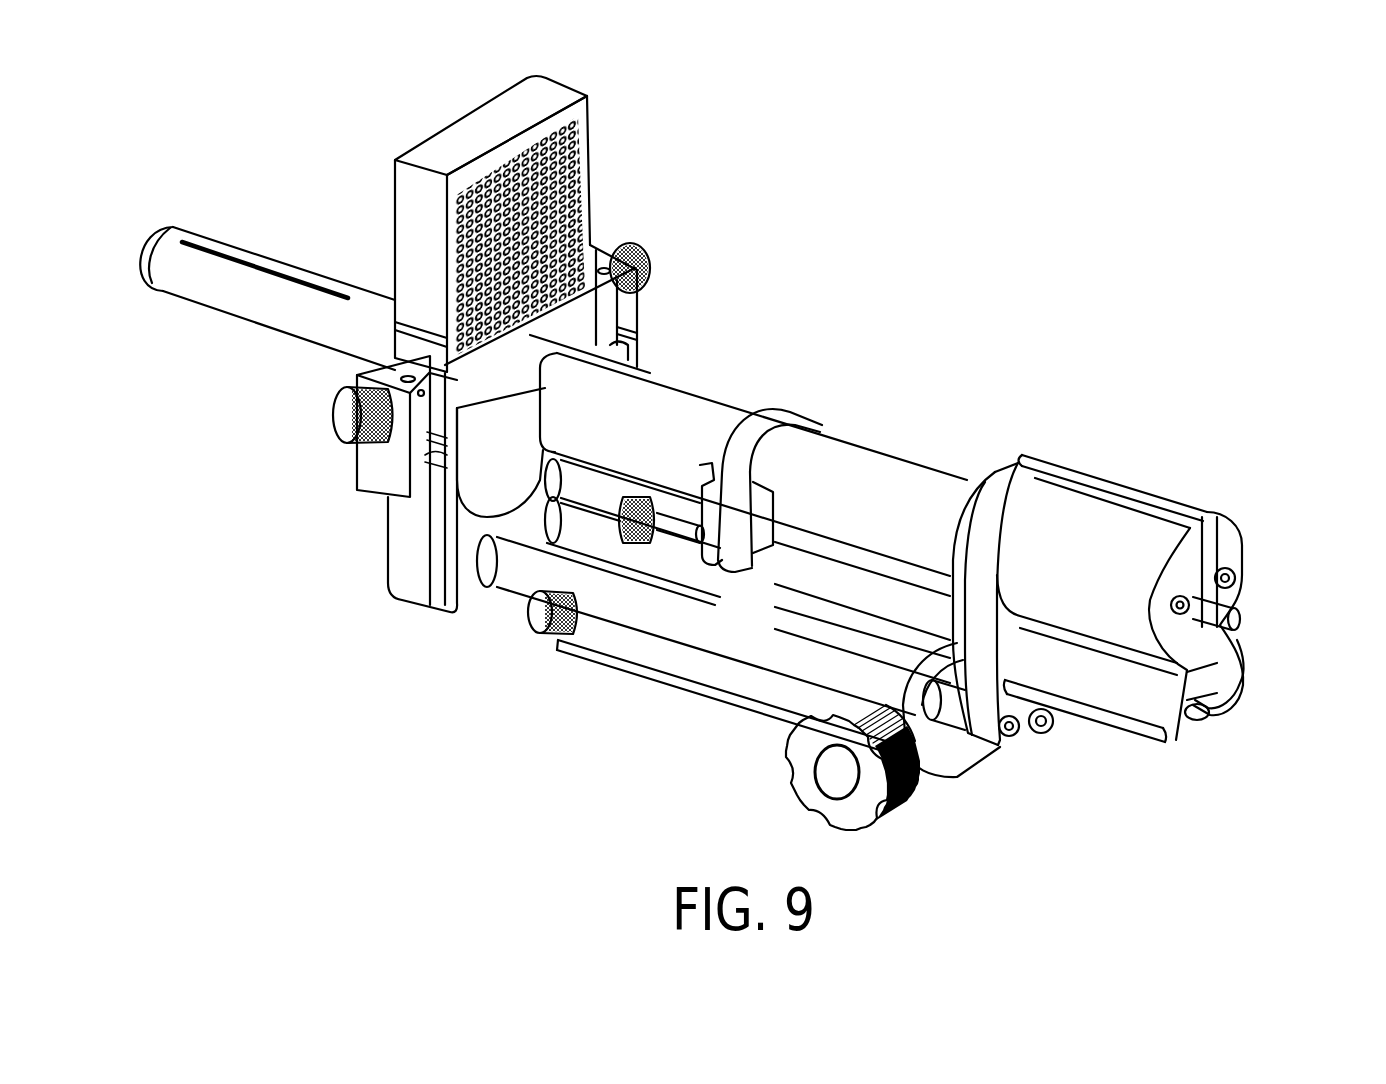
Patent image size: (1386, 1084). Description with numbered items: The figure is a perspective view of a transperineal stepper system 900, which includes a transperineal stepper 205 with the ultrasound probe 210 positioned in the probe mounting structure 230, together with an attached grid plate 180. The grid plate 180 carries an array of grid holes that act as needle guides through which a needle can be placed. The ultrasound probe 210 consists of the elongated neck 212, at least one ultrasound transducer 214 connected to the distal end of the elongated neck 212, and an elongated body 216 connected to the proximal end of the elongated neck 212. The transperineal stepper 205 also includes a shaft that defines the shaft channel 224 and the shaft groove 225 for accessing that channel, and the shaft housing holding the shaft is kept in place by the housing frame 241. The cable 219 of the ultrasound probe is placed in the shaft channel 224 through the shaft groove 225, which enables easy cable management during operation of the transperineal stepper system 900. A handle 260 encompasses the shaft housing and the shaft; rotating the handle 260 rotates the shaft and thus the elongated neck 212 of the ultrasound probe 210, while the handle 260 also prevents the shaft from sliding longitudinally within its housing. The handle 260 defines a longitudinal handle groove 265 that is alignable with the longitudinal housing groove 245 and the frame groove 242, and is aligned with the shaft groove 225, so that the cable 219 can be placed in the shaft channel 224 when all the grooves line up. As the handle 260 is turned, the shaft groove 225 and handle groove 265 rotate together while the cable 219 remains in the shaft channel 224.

The transperineal stepper system 900 is at (1078, 196).
The grid plate 180 is at (441, 141).
The elongated neck 212 is at (210, 310).
The ultrasound transducer 214 is at (225, 253).
The transperineal stepper 205 is at (742, 380).
The ultrasound probe 210 is at (868, 423).
The elongated body 216 is at (953, 470).
The frame groove 242 is at (1033, 457).
The longitudinal handle groove 265 is at (1090, 470).
The longitudinal housing groove 245 is at (1138, 517).
The shaft groove 225 is at (1197, 557).
The cable 219 is at (1245, 620).
The shaft channel 224 is at (1238, 660).
The handle 260 is at (1110, 723).
The housing frame 241 is at (983, 743).
The probe mounting structure 230 is at (608, 691).